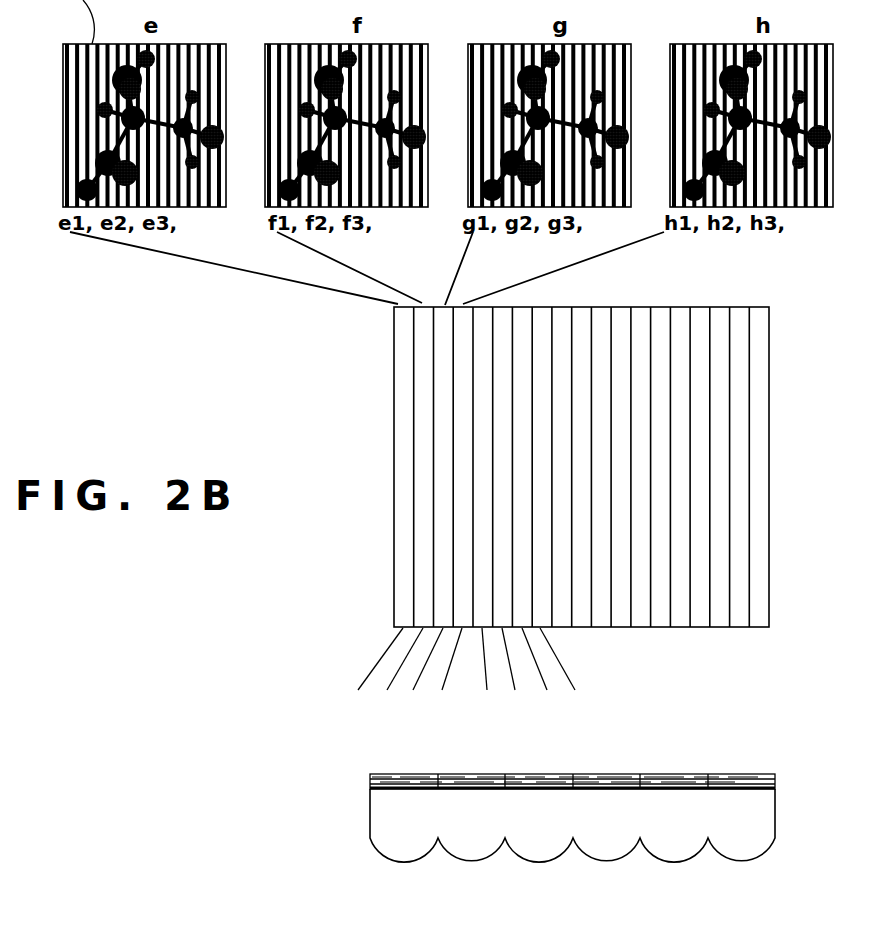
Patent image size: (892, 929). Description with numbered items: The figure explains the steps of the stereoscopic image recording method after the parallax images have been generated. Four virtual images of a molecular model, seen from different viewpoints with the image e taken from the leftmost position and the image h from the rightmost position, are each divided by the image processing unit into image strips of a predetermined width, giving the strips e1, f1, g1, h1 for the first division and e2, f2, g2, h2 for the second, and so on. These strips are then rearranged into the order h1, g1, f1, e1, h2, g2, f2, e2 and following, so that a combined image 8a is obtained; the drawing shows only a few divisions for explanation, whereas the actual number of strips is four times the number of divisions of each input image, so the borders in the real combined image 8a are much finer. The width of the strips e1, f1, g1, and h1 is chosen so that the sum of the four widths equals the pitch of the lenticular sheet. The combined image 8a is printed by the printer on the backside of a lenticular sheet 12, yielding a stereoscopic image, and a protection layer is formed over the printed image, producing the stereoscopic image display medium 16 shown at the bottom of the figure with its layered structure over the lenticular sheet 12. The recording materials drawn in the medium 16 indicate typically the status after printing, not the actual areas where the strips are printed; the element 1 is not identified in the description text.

The combined image 8a is at (394, 440).
The stereoscopic image display medium 16 is at (320, 770).
The recording layer stack 1 is at (370, 801).
The lenticular sheet 12 is at (775, 810).
The image strip e1 is at (448, 784).
The image strip f1 is at (425, 782).
The image strip g1 is at (400, 780).
The image strip h1 is at (374, 778).
The image strip e2 is at (508, 777).
The image strip f2 is at (482, 780).
The image strip g2 is at (465, 783).
The image strip h2 is at (440, 786).